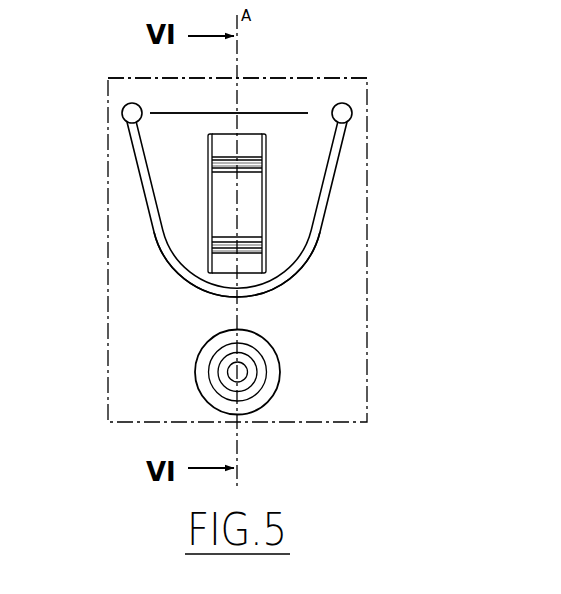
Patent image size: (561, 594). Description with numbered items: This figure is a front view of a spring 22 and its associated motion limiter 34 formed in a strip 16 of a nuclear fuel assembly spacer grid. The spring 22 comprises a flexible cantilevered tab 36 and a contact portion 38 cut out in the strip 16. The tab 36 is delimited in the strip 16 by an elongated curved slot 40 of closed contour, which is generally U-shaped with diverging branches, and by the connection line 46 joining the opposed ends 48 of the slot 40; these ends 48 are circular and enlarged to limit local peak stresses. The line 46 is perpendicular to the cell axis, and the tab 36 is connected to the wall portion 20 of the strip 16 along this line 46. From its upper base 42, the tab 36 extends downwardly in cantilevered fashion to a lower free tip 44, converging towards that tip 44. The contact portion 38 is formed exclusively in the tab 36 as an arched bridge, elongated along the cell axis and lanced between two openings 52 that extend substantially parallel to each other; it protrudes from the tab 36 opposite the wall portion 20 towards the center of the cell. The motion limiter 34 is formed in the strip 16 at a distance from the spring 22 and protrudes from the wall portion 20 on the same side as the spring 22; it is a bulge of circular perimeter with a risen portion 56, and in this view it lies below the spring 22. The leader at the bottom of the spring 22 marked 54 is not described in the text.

The strip 16 is at (378, 68).
The wall portion 20 is at (296, 77).
The spring 22 is at (251, 210).
The motion limiter 34 is at (309, 367).
The flexible cantilevered tab 36 is at (178, 174).
The contact portion 38 is at (181, 203).
The elongated curved slot 40 is at (319, 216).
The upper base 42 is at (172, 147).
The lower free tip 44 is at (278, 265).
The connection line 46 is at (308, 113).
The ends of the slot 48 is at (122, 112).
The openings 52 is at (212, 192).
The yoke portion 54 is at (173, 272).
The risen portion 56 is at (258, 358).